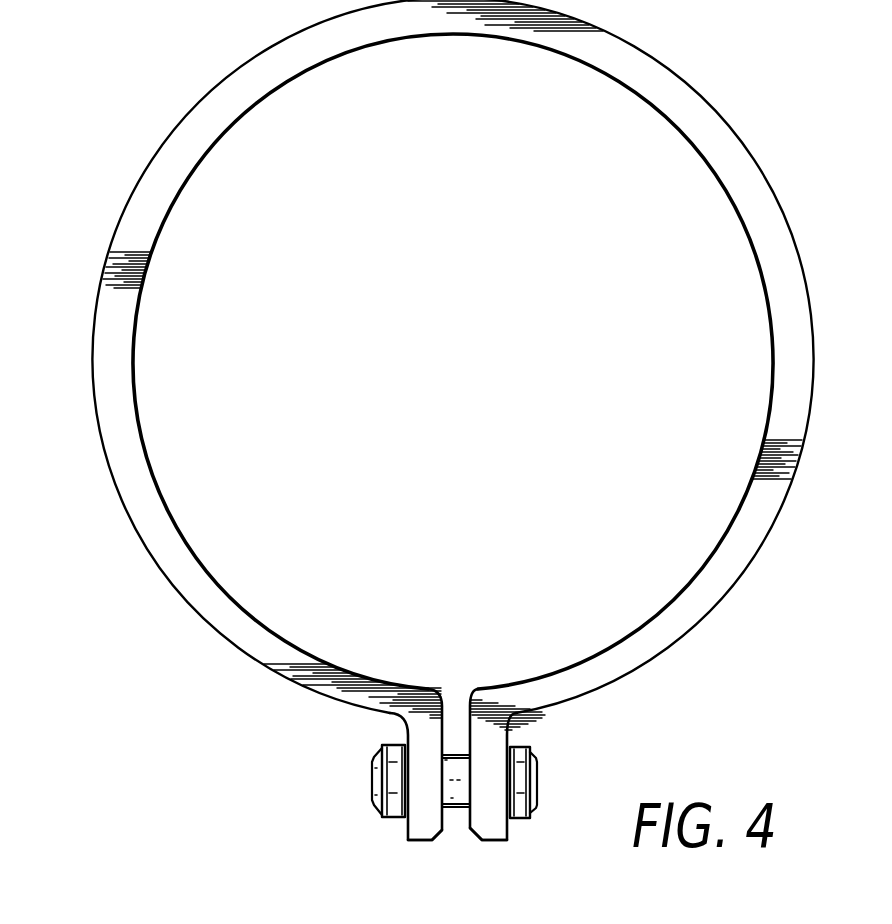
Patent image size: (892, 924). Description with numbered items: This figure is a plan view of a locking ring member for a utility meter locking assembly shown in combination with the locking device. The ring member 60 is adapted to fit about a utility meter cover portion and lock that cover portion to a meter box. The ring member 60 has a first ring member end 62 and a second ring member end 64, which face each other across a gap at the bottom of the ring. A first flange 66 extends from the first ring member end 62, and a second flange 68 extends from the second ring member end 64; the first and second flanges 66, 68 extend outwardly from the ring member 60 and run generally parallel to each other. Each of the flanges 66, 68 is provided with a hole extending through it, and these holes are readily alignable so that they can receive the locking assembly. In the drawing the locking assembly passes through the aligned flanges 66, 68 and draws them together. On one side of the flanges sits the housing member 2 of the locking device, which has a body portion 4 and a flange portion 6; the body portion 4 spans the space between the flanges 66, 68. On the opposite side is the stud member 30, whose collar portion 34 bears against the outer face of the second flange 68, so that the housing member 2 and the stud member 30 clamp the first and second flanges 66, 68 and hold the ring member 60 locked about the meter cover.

The ring member 60 is at (135, 508).
The first ring member end 62 is at (437, 697).
The second ring member end 64 is at (472, 697).
The first flange 66 is at (418, 841).
The second flange 68 is at (494, 841).
The housing member 2 is at (382, 820).
The body portion 4 is at (461, 810).
The flange portion 6 is at (397, 828).
The stud member 30 is at (533, 751).
The collar portion 34 is at (539, 775).